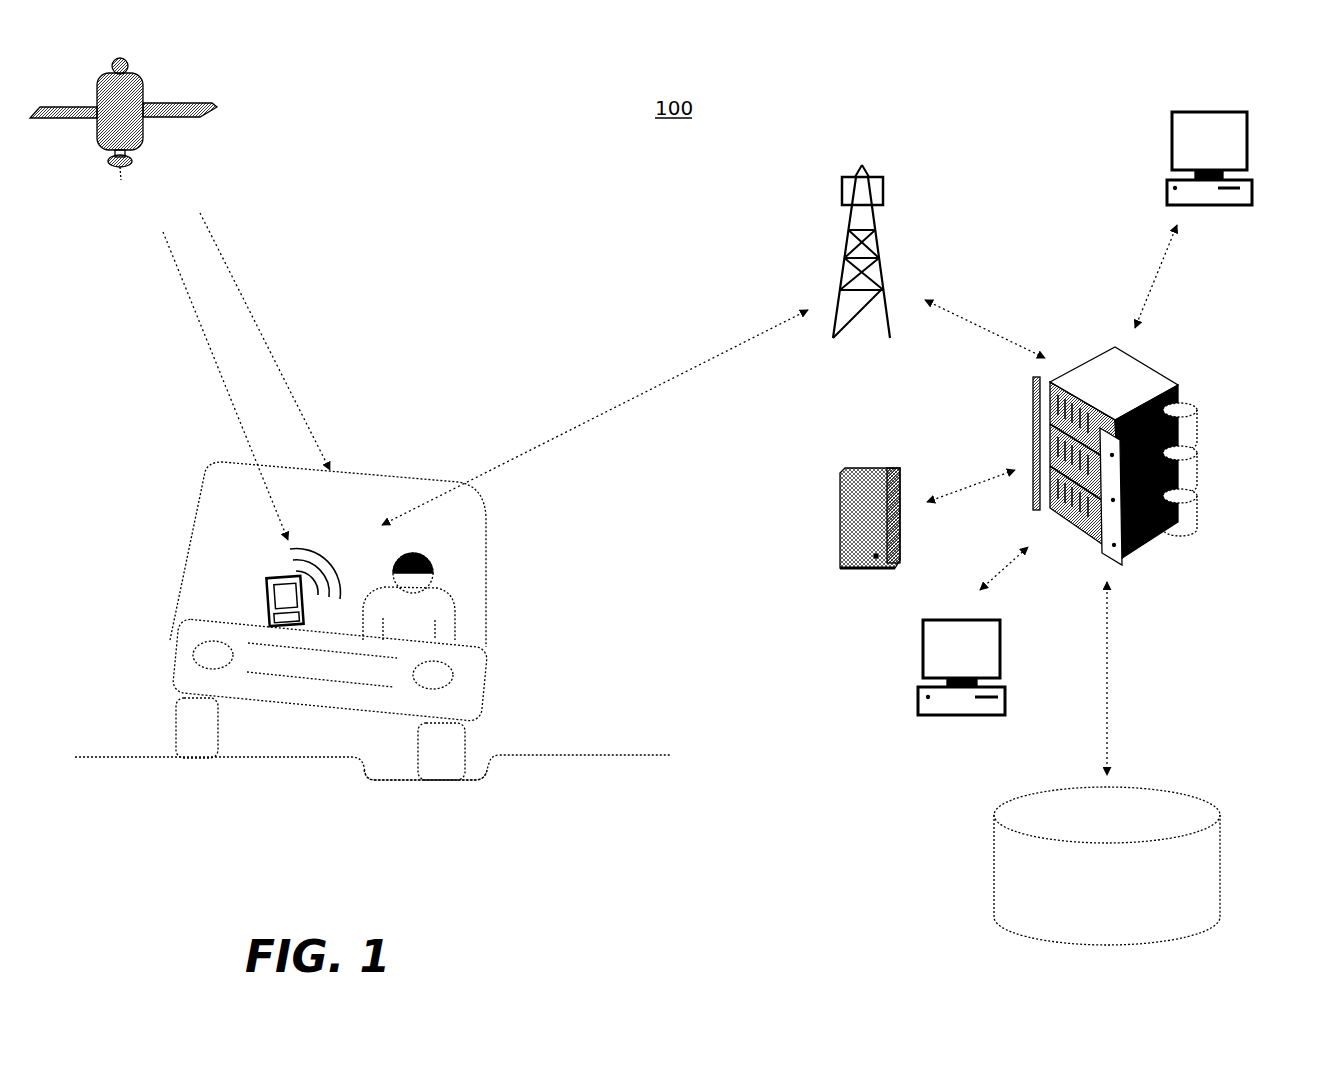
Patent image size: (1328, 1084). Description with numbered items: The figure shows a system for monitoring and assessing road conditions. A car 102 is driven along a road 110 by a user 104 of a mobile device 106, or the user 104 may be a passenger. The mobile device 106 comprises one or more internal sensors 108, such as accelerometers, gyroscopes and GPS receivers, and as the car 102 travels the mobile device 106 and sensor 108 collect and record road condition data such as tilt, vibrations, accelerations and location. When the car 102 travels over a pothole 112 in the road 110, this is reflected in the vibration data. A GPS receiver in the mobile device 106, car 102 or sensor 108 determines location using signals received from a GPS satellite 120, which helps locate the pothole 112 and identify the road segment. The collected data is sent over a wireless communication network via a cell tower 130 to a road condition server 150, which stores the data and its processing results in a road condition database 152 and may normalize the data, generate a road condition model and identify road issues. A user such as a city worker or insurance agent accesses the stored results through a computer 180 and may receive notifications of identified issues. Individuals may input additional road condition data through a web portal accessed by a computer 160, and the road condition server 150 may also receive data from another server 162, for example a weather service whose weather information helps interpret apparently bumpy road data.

The car 102 is at (185, 538).
The user 104 is at (418, 548).
The mobile device 106 is at (270, 608).
The internal sensor 108 is at (300, 621).
The road 110 is at (638, 755).
The pothole 112 is at (490, 768).
The GPS satellite 120 is at (197, 117).
The cell tower 130 is at (878, 258).
The road condition server 150 is at (1125, 367).
The road condition database 152 is at (1217, 845).
The computer 160 is at (942, 658).
The server 162 is at (870, 495).
The computer 180 is at (1218, 123).